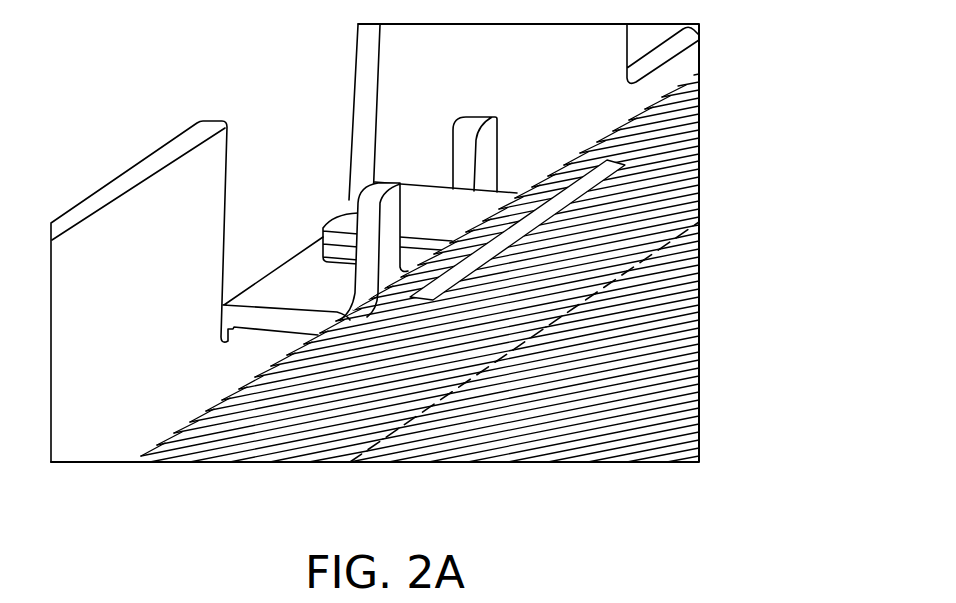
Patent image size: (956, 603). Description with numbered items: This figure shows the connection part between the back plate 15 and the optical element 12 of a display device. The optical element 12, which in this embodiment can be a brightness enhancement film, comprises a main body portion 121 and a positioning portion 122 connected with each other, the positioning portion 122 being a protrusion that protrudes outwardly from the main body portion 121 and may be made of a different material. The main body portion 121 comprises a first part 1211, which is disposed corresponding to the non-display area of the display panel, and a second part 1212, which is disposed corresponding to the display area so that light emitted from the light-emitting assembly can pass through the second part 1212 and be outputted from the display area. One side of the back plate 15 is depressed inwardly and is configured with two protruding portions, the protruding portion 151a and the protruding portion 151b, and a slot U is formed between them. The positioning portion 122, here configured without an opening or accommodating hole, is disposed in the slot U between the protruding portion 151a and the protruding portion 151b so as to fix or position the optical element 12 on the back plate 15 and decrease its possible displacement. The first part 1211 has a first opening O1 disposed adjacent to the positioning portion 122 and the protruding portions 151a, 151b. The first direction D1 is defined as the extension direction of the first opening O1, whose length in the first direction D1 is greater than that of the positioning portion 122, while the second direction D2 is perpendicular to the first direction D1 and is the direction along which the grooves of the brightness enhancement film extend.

The optical element 12 is at (449, 243).
The main body portion 121 is at (494, 268).
The first part 1211 is at (655, 200).
The second part 1212 is at (670, 297).
The positioning portion 122 is at (347, 223).
The back plate 15 is at (158, 200).
The protruding portion 151a is at (475, 133).
The protruding portion 151b is at (371, 194).
The first opening O1 is at (573, 193).
The slot U is at (438, 142).
The first direction D1 is at (173, 85).
The second direction D2 is at (167, 50).